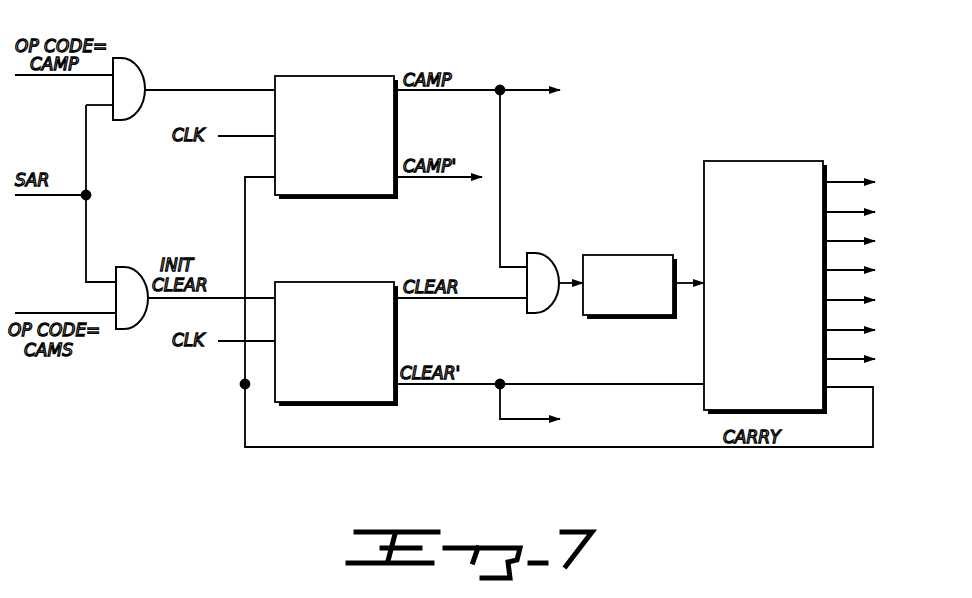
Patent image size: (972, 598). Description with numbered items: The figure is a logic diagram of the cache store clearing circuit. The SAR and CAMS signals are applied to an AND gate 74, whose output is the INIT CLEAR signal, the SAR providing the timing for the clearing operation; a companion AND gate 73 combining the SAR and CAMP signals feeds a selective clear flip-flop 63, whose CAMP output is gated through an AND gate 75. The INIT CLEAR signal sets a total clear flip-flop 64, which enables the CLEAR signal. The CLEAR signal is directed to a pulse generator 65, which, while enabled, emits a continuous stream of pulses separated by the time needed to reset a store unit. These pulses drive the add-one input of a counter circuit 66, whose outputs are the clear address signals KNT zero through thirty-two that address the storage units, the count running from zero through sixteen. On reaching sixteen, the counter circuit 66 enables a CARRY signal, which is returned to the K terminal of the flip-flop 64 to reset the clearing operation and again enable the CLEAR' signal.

The AND gate (OP CODE=CAMP, SAR) 73 is at (142, 73).
The AND gate 74 is at (142, 318).
The selective clear flip-flop 63 is at (312, 76).
The flip-flop 64 is at (312, 282).
The AND gate 75 is at (540, 254).
The pulse generator 65 is at (638, 255).
The counter circuit 66 is at (790, 161).